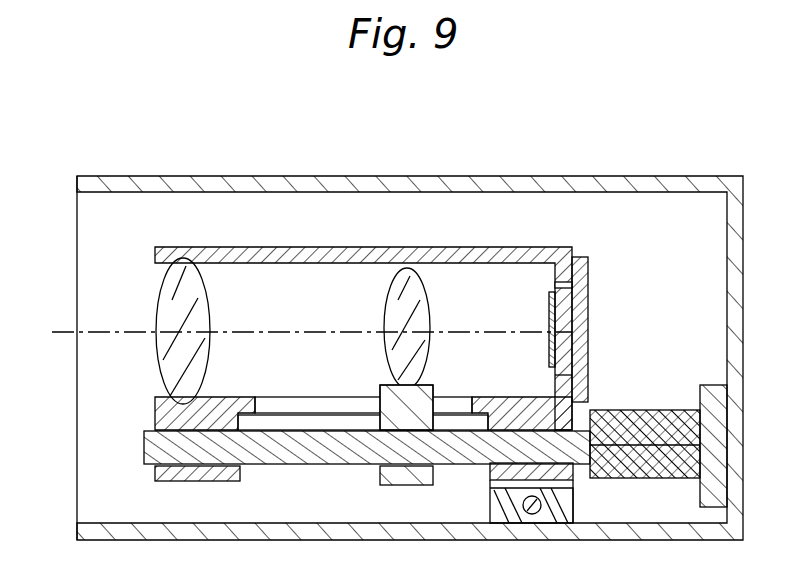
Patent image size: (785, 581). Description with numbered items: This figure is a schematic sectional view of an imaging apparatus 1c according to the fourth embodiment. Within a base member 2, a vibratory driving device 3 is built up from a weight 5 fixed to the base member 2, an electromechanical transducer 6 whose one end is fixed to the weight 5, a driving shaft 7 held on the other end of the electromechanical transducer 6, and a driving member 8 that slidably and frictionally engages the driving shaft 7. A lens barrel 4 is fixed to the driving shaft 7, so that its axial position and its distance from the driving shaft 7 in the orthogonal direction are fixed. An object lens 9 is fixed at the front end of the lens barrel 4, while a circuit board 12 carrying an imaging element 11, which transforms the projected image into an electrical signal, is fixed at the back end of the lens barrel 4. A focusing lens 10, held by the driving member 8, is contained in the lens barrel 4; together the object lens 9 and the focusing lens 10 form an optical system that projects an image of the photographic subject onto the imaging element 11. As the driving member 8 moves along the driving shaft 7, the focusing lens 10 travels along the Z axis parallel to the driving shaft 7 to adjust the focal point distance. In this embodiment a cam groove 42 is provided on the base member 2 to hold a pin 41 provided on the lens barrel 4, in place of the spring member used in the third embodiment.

The imaging apparatus 1c is at (344, 170).
The base member 2 is at (463, 176).
The vibratory driving device 3 is at (614, 400).
The lens barrel 4 is at (556, 247).
The weight 5 is at (713, 385).
The electromechanical transducer 6 is at (668, 410).
The driving shaft 7 is at (293, 465).
The driving member 8 is at (381, 482).
The object lens 9 is at (158, 298).
The focusing lens 10 is at (426, 299).
The imaging element 11 is at (549, 342).
The circuit board 12 is at (588, 290).
The pin 41 is at (518, 507).
The cam groove 42 is at (548, 500).